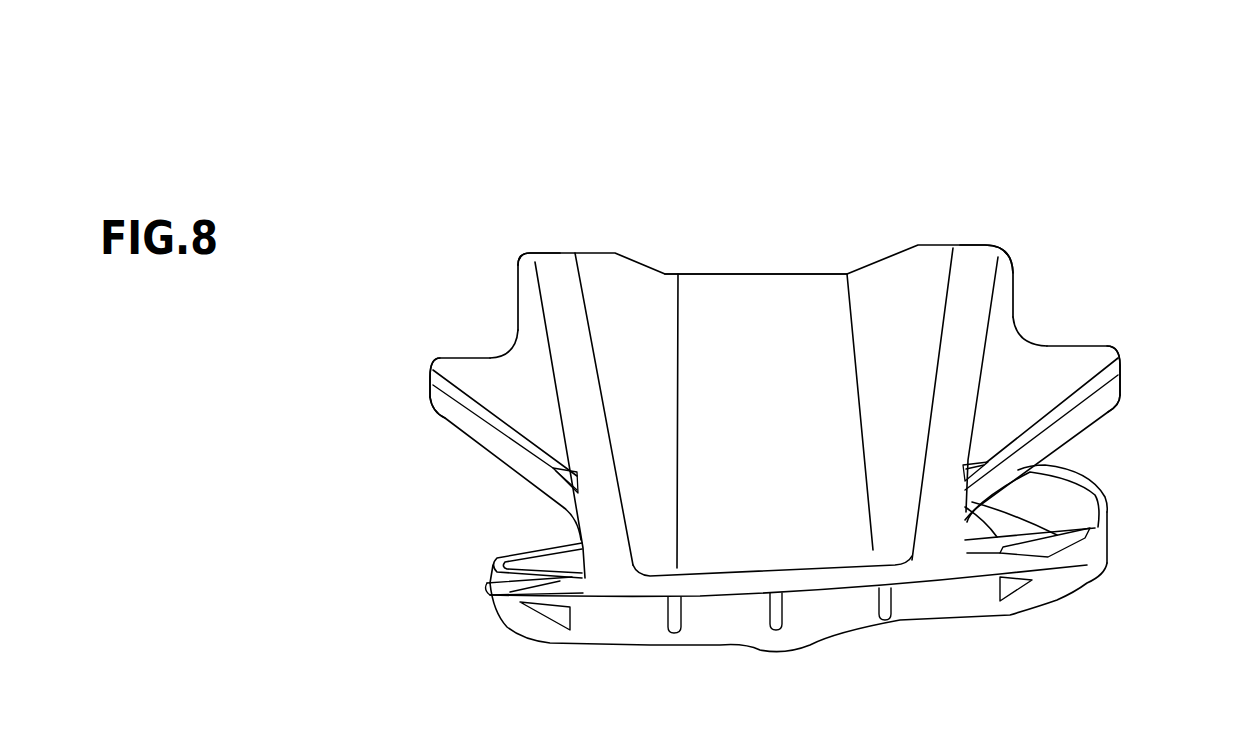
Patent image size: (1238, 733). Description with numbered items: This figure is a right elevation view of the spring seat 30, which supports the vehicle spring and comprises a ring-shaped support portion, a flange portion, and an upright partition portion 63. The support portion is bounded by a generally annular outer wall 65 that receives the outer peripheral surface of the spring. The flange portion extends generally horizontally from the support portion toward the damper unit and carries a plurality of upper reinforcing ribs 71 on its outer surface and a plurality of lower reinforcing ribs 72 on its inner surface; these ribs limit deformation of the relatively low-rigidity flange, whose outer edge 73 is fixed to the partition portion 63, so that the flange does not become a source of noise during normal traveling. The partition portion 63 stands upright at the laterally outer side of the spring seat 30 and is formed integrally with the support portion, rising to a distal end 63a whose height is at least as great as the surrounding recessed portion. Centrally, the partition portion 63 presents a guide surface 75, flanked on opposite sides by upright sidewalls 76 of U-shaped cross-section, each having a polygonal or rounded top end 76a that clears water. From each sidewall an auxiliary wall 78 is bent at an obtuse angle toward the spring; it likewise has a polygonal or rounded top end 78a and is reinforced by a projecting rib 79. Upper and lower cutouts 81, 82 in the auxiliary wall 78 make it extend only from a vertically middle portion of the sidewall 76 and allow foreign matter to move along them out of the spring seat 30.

The spring seat 30 is at (363, 108).
The partition portion 63 is at (737, 253).
The distal end 63a is at (702, 273).
The annular outer wall 65 is at (1104, 498).
The upper reinforcing ribs 71 is at (488, 583).
The lower reinforcing ribs 72 is at (553, 610).
The outer edge 73 is at (941, 582).
The guide surface 75 is at (777, 287).
The upright sidewalls 76 is at (562, 270).
The top end 76a is at (530, 254).
The auxiliary walls 78 is at (473, 377).
The top end 78a is at (435, 358).
The projecting rib 79 is at (477, 410).
The upper cutout 81 is at (505, 348).
The lower cutout 82 is at (552, 500).